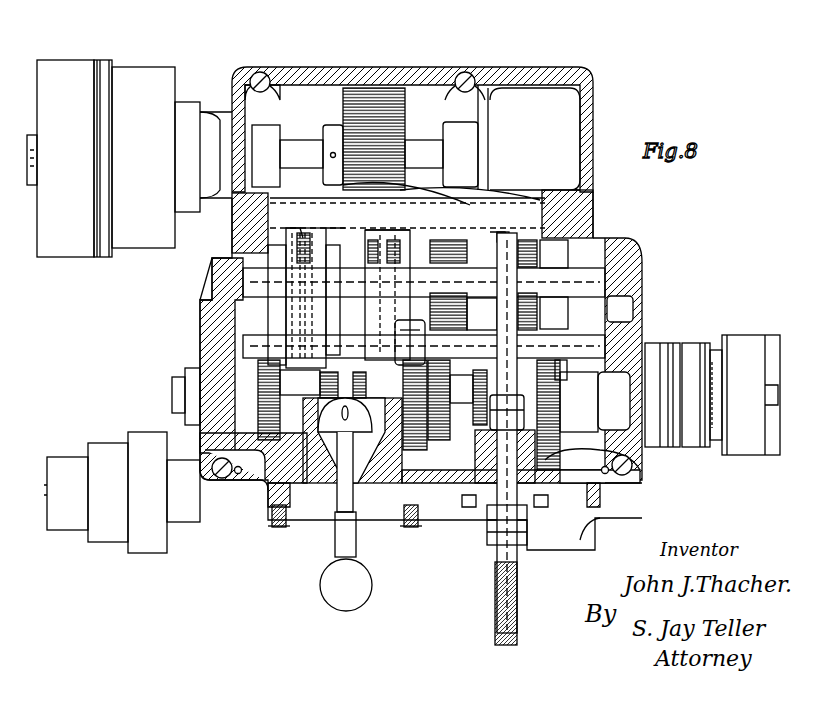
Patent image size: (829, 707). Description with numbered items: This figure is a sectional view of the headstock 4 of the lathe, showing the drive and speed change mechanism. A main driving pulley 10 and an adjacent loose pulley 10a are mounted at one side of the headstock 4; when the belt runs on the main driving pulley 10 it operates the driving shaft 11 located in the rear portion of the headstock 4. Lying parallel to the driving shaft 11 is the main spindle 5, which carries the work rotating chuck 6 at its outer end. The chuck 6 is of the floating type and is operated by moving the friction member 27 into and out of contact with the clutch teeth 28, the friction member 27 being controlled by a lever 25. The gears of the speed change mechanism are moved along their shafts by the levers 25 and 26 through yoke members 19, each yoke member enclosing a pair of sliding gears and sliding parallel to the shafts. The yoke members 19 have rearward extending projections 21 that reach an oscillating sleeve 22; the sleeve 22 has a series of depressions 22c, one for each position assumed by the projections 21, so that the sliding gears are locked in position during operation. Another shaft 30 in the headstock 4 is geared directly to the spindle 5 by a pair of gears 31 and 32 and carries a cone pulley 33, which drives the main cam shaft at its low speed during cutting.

The headstock 4 is at (207, 310).
The main spindle 5 is at (172, 392).
The work rotating chuck 6 is at (752, 345).
The main driving pulley 10 is at (78, 257).
The loose pulley 10a is at (147, 80).
The driving shaft 11 is at (305, 148).
The yoke members 19 is at (303, 303).
The rearward extending projections 21 is at (300, 253).
The oscillating sleeve 22 is at (530, 182).
The depressions 22c is at (415, 237).
The lever 25 is at (340, 455).
The lever 26 is at (500, 490).
The friction member 27 is at (690, 355).
The clutch teeth 28 is at (718, 343).
The shaft 30 is at (47, 490).
The gear 31 is at (636, 478).
The gear 32 is at (560, 378).
The cone pulley 33 is at (118, 542).